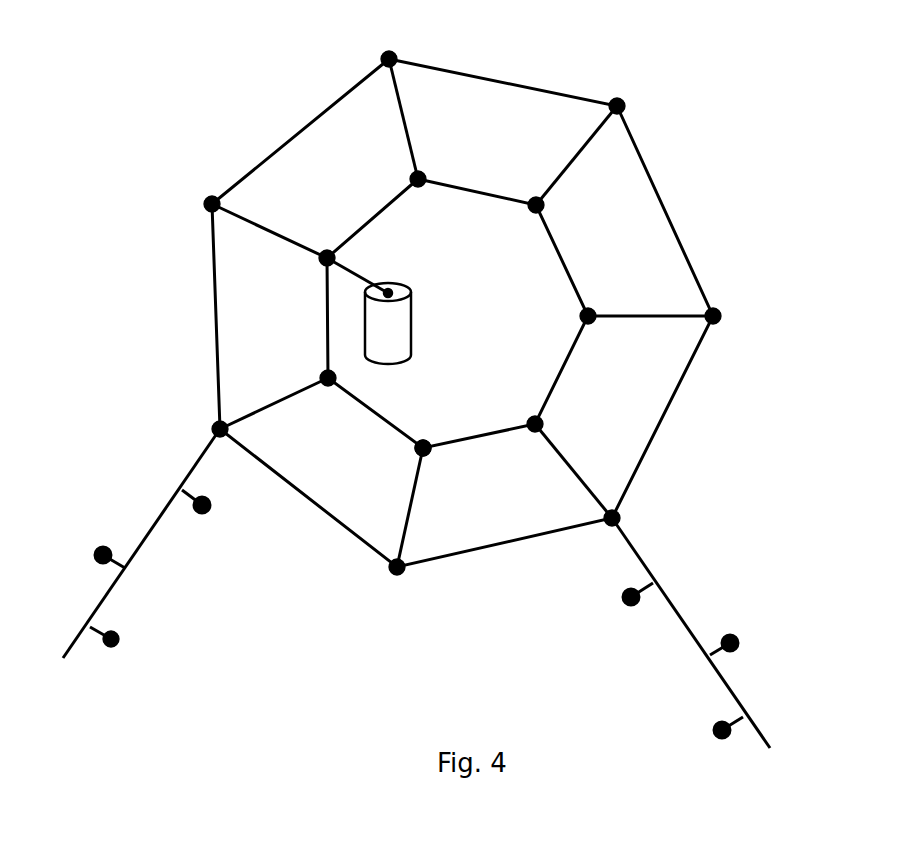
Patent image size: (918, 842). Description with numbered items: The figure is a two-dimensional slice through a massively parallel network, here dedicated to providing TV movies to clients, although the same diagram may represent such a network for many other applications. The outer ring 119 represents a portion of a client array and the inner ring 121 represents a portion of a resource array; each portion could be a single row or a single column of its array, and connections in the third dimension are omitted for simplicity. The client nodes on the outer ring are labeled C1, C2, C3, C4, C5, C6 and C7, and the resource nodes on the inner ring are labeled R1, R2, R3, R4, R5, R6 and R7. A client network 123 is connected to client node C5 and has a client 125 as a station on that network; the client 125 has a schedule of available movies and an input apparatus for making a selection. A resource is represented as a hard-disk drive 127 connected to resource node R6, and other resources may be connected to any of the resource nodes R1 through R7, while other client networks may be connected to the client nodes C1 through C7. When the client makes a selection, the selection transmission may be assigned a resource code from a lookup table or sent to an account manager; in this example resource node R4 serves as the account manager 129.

The ring 119 is at (477, 72).
The ring 121 is at (565, 367).
The client network 123 is at (153, 523).
The client 125 is at (118, 643).
The hard-disk drive 127 is at (397, 285).
The account manager 129 is at (416, 448).
The client node C1 is at (631, 95).
The client node C2 is at (733, 319).
The client node C3 is at (601, 535).
The client node C4 is at (391, 583).
The client node C5 is at (200, 427).
The client node C6 is at (193, 205).
The client node C7 is at (384, 43).
The resource node R1 is at (527, 190).
The resource node R2 is at (603, 303).
The resource node R3 is at (520, 412).
The resource node R4 is at (426, 434).
The resource node R5 is at (309, 370).
The resource node R6 is at (309, 234).
The resource node R7 is at (397, 175).